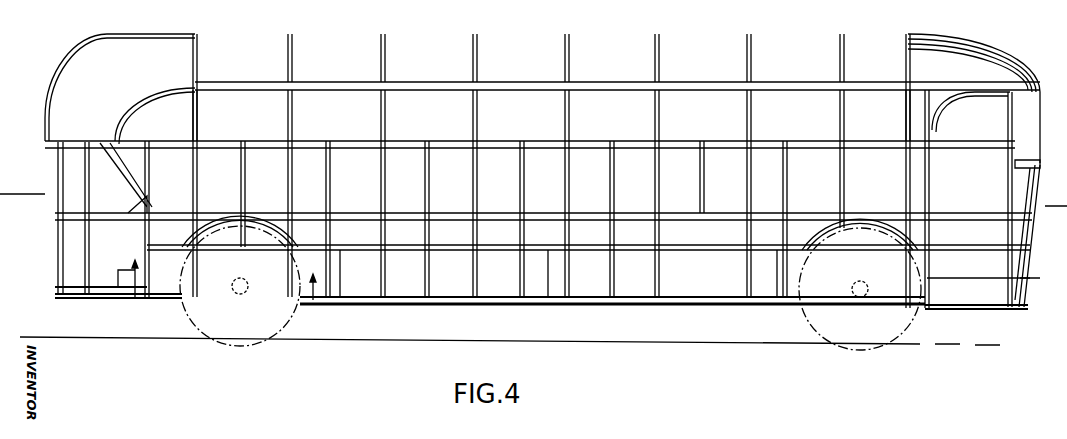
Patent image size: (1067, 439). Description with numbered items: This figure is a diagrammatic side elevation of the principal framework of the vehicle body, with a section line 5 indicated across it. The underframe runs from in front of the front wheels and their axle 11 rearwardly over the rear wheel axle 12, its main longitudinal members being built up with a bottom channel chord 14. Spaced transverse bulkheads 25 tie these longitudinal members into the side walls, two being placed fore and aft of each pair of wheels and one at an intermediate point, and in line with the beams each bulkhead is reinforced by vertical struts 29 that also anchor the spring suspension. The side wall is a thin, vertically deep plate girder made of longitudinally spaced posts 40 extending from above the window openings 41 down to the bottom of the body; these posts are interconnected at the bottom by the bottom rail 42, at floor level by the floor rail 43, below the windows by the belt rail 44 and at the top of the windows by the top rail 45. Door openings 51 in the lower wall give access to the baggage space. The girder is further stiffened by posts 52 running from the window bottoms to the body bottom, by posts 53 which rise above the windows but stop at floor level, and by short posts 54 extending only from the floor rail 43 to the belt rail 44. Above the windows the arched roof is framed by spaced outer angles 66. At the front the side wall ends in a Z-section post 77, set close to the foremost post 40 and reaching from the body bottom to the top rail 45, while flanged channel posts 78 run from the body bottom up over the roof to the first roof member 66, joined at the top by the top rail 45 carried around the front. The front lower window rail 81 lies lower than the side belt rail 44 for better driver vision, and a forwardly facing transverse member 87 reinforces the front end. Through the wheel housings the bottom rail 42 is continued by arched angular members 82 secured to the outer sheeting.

The section line 5- 5 is at (12, 196).
The front wheel axle 11 is at (860, 289).
The rear wheel axle 12 is at (240, 286).
The bottom channel chord 14 is at (712, 252).
The transverse bulkhead 25 is at (154, 280).
The vertical strut 29 is at (959, 268).
The post 40 is at (197, 190).
The window opening 41 is at (800, 133).
The bottom rail 42 is at (661, 308).
The floor rail 43 is at (686, 222).
The belt rail 44 is at (693, 150).
The top rail 45 is at (690, 92).
The door opening 51 is at (462, 300).
The vertical post 52 is at (149, 175).
The post 53 is at (477, 119).
The post 54 is at (246, 169).
The outer angle 66 is at (477, 60).
The vertical post 77 is at (931, 176).
The post 78 is at (1010, 146).
The lower window rail 81 is at (1038, 163).
The arched angular member 82 is at (840, 240).
The transverse member 87 is at (1032, 270).